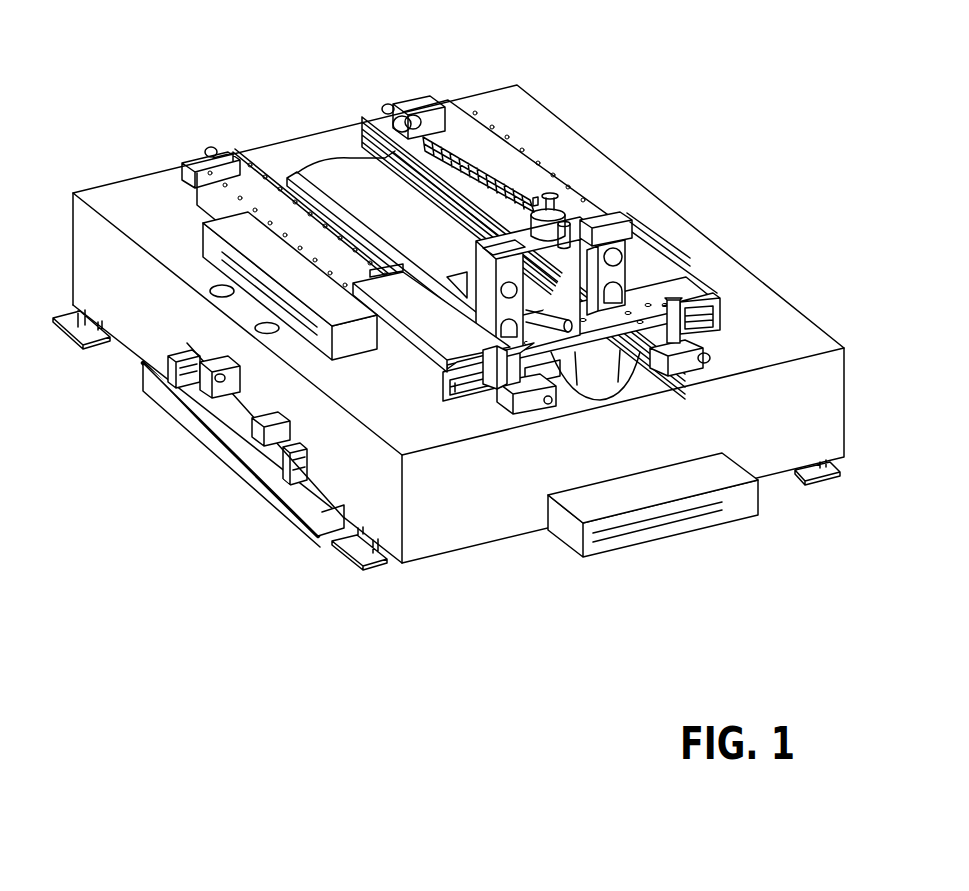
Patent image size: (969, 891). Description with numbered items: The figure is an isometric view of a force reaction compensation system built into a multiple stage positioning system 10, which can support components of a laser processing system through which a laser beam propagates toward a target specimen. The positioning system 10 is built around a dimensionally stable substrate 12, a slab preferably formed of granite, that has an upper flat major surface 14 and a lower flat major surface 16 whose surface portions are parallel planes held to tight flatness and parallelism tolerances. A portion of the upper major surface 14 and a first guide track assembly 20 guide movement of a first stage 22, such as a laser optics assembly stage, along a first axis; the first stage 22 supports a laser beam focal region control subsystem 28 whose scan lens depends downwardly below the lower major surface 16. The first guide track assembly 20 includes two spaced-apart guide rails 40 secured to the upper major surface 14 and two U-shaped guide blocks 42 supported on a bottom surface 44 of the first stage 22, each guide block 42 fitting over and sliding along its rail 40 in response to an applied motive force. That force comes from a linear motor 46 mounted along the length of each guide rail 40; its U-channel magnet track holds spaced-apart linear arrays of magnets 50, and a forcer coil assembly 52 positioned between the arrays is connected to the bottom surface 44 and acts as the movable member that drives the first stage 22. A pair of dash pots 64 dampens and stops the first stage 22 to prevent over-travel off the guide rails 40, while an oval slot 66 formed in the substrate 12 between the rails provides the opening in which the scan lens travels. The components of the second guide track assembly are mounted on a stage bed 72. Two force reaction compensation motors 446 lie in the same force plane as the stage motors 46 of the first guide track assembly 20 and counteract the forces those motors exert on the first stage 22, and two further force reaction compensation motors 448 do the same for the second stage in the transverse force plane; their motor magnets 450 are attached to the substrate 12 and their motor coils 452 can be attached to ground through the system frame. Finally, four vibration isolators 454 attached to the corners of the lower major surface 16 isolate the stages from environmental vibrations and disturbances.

The multiple stage positioning system 10 is at (569, 62).
The dimensionally stable substrate 12 is at (318, 528).
The upper flat major surface 14 is at (124, 190).
The lower flat major surface 16 is at (132, 356).
The first guide track assembly 20 is at (590, 390).
The first stage 22 is at (540, 378).
The laser beam focal region control subsystem 28 is at (559, 185).
The guide rail 40 is at (375, 118).
The U-shaped guide block 42 is at (207, 372).
The bottom surface of first stage 44 is at (592, 387).
The linear motor 46 is at (413, 362).
The magnets 50 is at (492, 386).
The forcer coil assembly 52 is at (443, 383).
The dash pot 64 is at (683, 373).
The oval slot 66 is at (338, 178).
The stage bed 72 is at (267, 500).
The force reaction compensation motor 446 is at (211, 273).
The force reaction compensation motor 448 is at (729, 526).
The motor magnets 450 is at (227, 229).
The motor coils 452 is at (322, 342).
The vibration isolators 454 is at (63, 342).